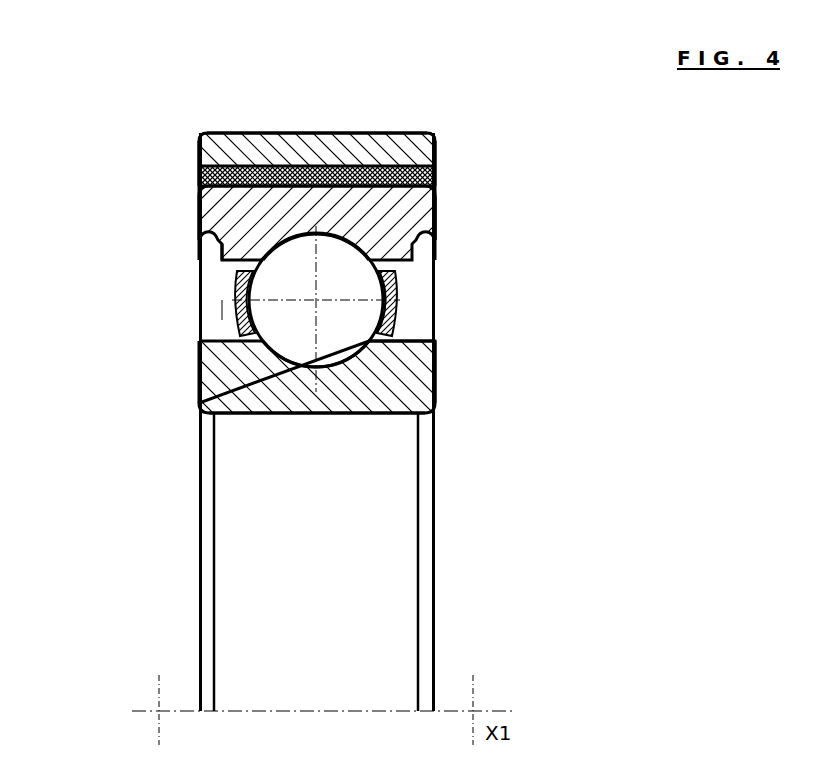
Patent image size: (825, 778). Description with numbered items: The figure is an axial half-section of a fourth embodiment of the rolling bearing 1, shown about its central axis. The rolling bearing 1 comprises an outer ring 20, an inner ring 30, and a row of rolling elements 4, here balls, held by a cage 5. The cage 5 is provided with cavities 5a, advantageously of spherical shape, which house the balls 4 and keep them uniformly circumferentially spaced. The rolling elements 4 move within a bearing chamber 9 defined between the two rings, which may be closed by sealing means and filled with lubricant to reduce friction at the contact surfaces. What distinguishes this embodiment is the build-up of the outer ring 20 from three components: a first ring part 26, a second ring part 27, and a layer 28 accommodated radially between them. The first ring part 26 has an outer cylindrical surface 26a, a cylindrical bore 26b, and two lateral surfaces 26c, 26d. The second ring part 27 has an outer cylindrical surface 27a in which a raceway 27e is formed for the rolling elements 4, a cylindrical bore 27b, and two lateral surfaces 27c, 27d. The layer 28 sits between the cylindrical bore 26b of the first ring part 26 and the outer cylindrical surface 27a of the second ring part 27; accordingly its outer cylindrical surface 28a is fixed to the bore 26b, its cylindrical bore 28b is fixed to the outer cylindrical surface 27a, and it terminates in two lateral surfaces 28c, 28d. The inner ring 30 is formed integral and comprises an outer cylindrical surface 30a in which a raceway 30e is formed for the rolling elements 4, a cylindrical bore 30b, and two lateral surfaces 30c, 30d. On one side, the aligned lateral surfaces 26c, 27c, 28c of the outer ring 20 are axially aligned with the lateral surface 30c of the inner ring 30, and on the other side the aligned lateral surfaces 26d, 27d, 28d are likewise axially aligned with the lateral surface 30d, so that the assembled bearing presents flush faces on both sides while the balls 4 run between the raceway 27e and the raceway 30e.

The rolling bearing 1 is at (497, 439).
The rolling elements 4 is at (356, 286).
The cage 5 is at (398, 280).
The cavities 5a is at (378, 288).
The bearing chamber 9 is at (218, 310).
The outer ring 20 is at (462, 58).
The first ring part 26 is at (420, 139).
The outer cylindrical surface 26a is at (270, 132).
The cylindrical bore 26b is at (436, 207).
The lateral surface 26c is at (198, 153).
The lateral surface 26d is at (436, 146).
The second ring part 27 is at (400, 164).
The outer cylindrical surface 27a is at (262, 188).
The cylindrical bore 27b is at (228, 280).
The lateral surface 27c is at (198, 222).
The lateral surface 27d is at (437, 222).
The raceway 27e is at (313, 233).
The layer 28 is at (338, 190).
The outer cylindrical surface 28a is at (230, 170).
The cylindrical bore 28b is at (198, 208).
The lateral surface 28c is at (198, 180).
The lateral surface 28d is at (436, 176).
The inner ring 30 is at (404, 434).
The outer cylindrical surface 30a is at (410, 340).
The cylindrical bore 30b is at (233, 420).
The lateral surface 30c is at (198, 382).
The lateral surface 30d is at (437, 376).
The raceway 30e is at (398, 292).